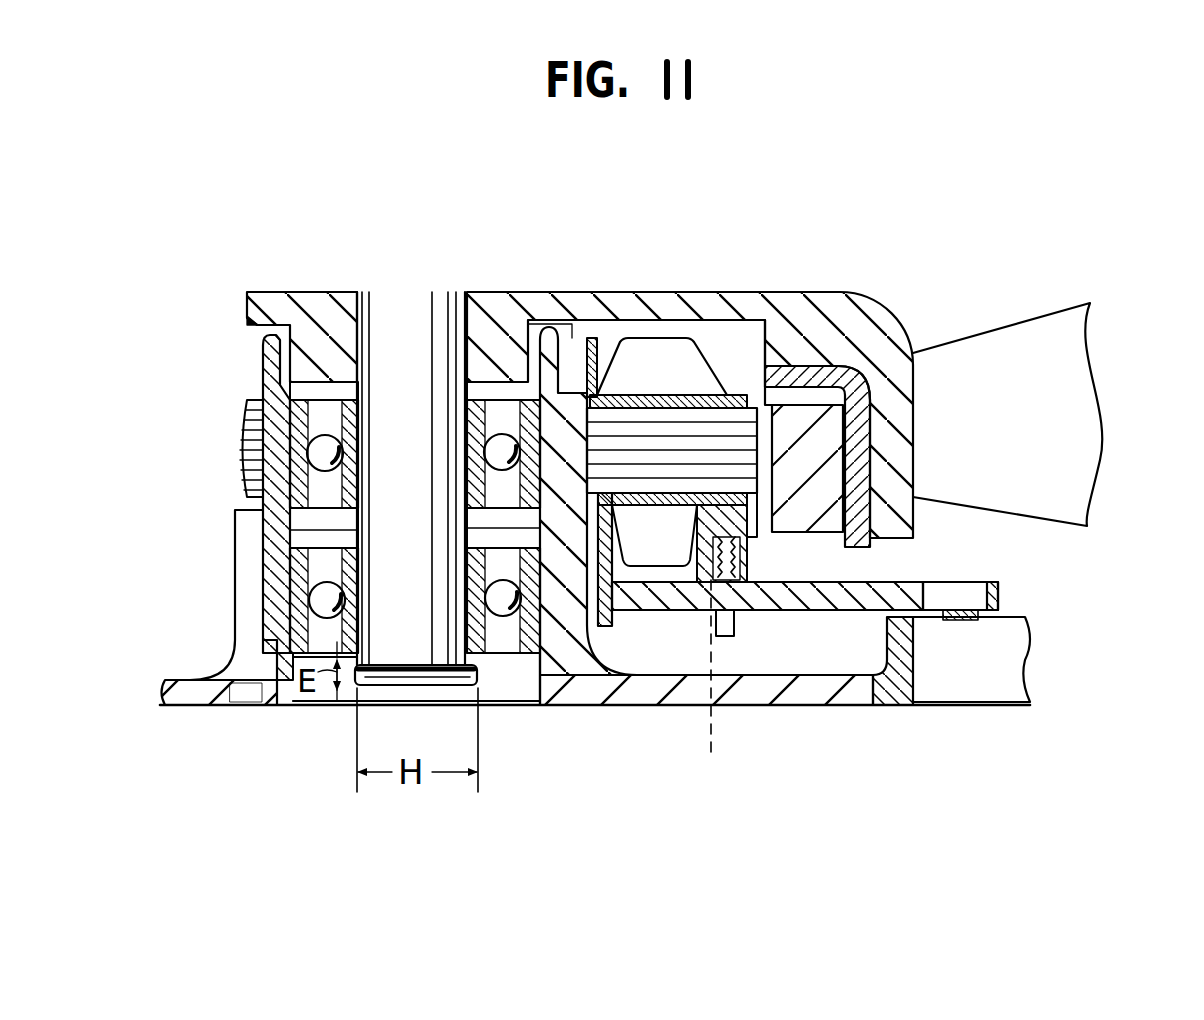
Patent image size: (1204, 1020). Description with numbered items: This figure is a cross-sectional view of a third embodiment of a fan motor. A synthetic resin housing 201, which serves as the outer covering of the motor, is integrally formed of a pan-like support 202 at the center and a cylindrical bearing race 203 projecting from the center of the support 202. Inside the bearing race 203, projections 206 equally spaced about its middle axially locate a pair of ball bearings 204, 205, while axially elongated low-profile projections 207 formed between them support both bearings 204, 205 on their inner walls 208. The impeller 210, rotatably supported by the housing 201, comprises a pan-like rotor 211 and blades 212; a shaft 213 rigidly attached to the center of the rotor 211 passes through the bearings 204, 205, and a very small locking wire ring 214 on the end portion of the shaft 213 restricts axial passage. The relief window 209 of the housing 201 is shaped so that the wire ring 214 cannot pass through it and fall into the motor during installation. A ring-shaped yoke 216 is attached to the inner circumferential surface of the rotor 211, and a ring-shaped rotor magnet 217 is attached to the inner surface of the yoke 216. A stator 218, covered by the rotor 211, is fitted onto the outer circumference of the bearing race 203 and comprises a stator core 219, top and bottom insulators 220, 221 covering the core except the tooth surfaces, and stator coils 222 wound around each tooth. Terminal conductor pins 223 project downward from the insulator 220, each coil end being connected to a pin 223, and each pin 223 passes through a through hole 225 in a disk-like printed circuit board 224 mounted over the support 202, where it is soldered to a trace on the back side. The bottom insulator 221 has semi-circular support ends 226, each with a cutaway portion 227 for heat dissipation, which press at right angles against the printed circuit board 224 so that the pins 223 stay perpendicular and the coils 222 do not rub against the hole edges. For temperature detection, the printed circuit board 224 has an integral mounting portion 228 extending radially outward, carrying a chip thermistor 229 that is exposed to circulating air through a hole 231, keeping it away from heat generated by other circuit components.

The synthetic resin housing 201 is at (905, 708).
The pan-like support 202 is at (641, 707).
The cylindrical bearing race 203 is at (570, 376).
The ball bearing 204 is at (508, 380).
The ball bearing 205 is at (507, 657).
The projections 206 is at (520, 530).
The low-profile projections 207 is at (297, 600).
The inner walls 208 is at (293, 530).
The relief window 209 is at (240, 707).
The impeller 210 is at (284, 290).
The pan-like rotor 211 is at (733, 383).
The blades 212 is at (1032, 318).
The shaft 213 is at (432, 291).
The locking wire ring 214 is at (380, 688).
The ring-shaped yoke 216 is at (858, 296).
The ring-shaped rotor magnet 217 is at (823, 423).
The stator 218 is at (808, 378).
The stator core 219 is at (750, 467).
The top insulator 220 is at (752, 366).
The bottom insulator 221 is at (873, 612).
The stator coils 222 is at (658, 337).
The terminal conductor pin 223 is at (735, 640).
The printed circuit board 224 is at (880, 702).
The through hole 225 is at (723, 685).
The semi-circular support end 226 is at (700, 570).
The cutaway portion 227 is at (752, 515).
The mounting portion 228 is at (990, 577).
The chip thermistor 229 is at (967, 622).
The hole 231 is at (930, 607).